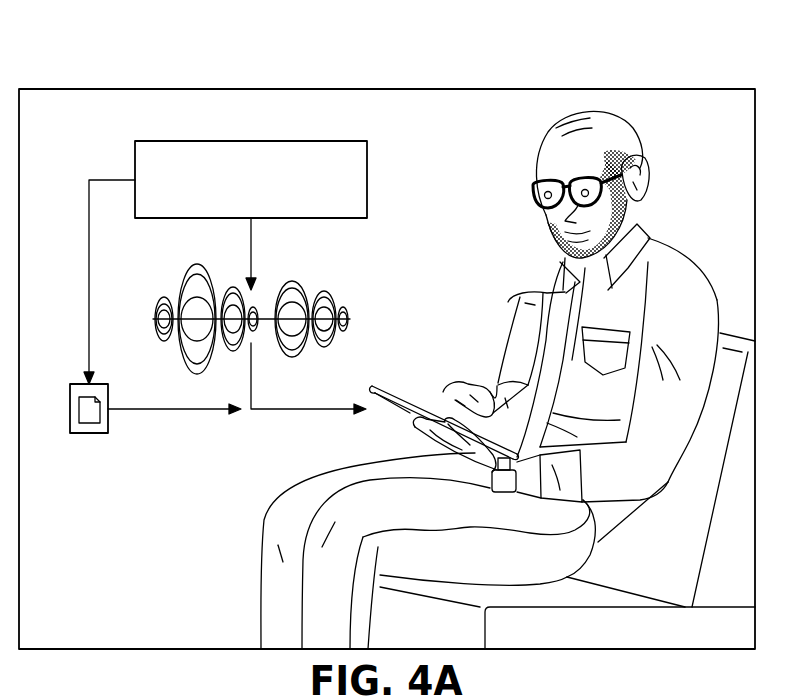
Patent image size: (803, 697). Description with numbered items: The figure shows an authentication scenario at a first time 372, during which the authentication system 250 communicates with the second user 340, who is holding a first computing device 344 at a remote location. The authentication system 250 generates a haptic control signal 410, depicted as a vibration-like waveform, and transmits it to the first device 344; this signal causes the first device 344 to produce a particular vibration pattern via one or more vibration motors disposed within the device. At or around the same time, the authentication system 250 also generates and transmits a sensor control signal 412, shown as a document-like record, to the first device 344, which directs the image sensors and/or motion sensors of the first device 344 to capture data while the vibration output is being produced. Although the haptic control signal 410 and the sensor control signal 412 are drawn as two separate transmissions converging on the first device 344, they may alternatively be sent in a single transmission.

The first time 372 is at (130, 89).
The authentication system 250 is at (367, 183).
The haptic control signal 410 is at (352, 287).
The sensor control signal 412 is at (85, 456).
The second user 340 is at (516, 202).
The first computing device 344 is at (416, 388).